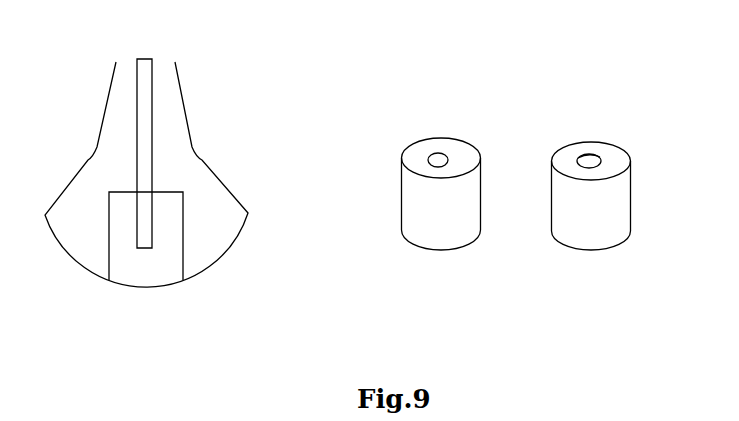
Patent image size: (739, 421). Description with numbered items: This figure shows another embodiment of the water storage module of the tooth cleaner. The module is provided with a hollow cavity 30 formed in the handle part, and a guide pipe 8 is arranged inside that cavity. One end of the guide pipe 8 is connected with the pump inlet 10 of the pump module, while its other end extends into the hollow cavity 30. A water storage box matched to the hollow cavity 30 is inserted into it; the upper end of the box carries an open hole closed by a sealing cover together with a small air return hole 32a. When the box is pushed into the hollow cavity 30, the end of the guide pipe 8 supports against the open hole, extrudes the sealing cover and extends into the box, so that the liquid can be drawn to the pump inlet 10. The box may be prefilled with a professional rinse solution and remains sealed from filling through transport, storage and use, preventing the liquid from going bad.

The pump inlet 10 is at (146, 154).
The first guide pipe 8 is at (152, 120).
The hollow cavity 30 is at (187, 212).
The small air return hole 32a is at (600, 147).